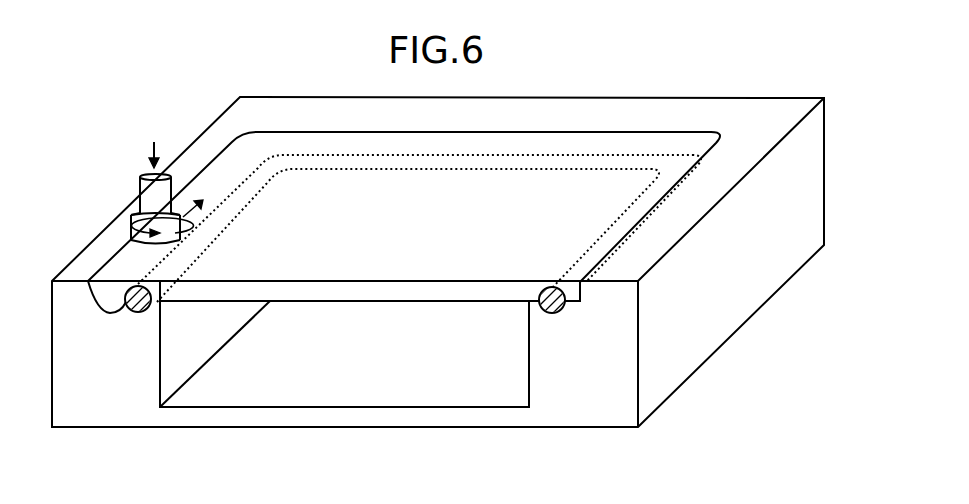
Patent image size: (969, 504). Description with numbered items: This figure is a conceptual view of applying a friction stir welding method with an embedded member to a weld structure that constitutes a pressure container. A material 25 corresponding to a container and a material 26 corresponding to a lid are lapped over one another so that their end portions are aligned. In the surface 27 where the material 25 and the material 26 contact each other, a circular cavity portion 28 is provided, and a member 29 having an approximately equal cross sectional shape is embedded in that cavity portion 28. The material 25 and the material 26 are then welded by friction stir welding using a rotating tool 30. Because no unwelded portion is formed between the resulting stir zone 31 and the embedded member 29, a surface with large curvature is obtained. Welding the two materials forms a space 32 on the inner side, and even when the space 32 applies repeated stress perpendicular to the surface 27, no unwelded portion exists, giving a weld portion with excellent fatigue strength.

The material corresponding to a container 25 is at (680, 345).
The material corresponding to a lid 26 is at (330, 291).
The surface 27 is at (162, 304).
The circular cavity portion 28 is at (152, 312).
The embedded member 29 is at (133, 313).
The rotating tool 30 is at (143, 177).
The stir zone 31 is at (143, 253).
The space 32 is at (343, 388).